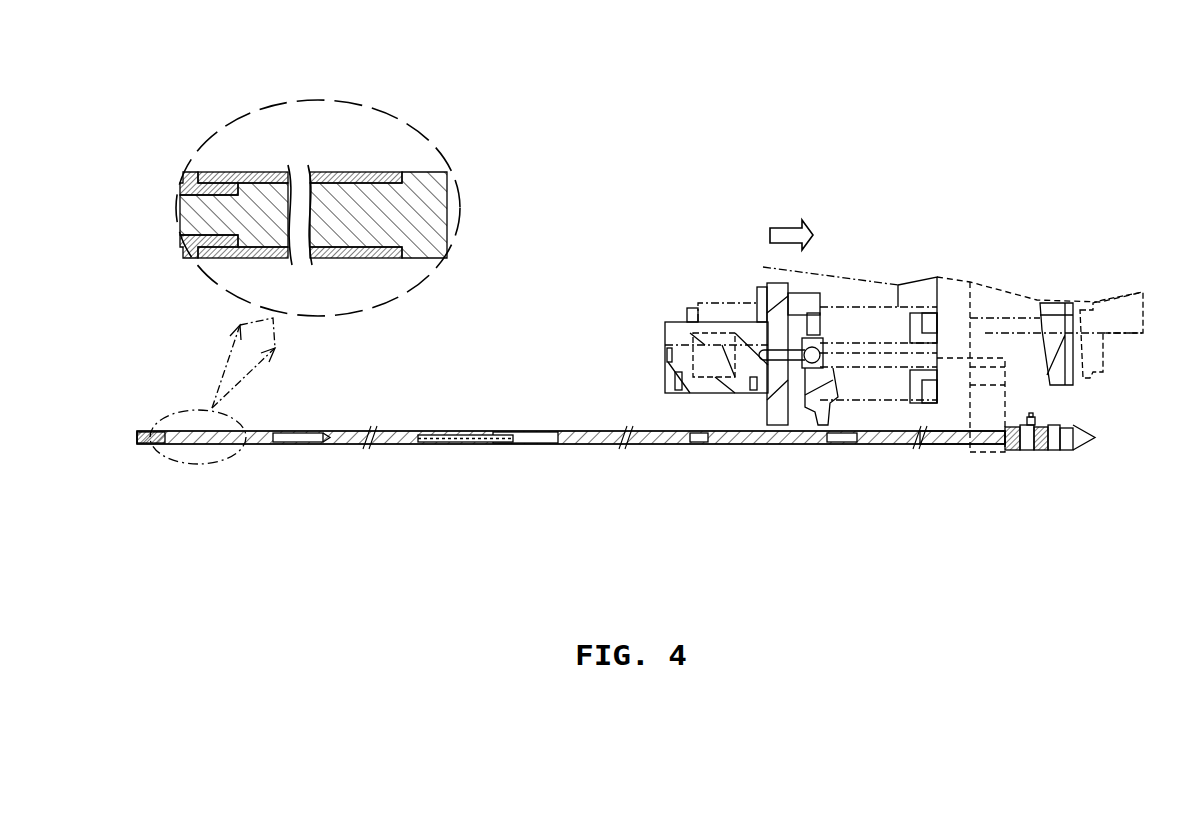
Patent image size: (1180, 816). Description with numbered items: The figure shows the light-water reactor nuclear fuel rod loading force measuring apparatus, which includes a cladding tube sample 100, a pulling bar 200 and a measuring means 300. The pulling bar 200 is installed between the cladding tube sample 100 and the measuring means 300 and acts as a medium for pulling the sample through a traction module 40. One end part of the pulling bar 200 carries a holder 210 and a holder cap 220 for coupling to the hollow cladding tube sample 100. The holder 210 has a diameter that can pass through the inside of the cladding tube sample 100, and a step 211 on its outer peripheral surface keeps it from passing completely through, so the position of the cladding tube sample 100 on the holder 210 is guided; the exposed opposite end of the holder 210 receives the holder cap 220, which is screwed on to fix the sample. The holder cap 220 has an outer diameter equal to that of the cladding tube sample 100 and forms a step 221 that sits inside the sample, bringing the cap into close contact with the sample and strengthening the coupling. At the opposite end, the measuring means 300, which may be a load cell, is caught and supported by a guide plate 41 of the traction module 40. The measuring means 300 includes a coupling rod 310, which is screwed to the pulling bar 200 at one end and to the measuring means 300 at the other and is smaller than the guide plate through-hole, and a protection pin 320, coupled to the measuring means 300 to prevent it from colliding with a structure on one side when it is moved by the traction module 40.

The cladding tube sample 100 is at (327, 172).
The pulling bar 200 is at (576, 431).
The holder 210 is at (447, 208).
The step 211 is at (382, 172).
The holder cap 220 is at (183, 183).
The step 221 is at (196, 172).
The measuring means 300 is at (1026, 450).
The coupling rod 310 is at (936, 445).
The protection pin 320 is at (1080, 432).
The traction module 40 is at (870, 323).
The guide plate 41 is at (990, 358).